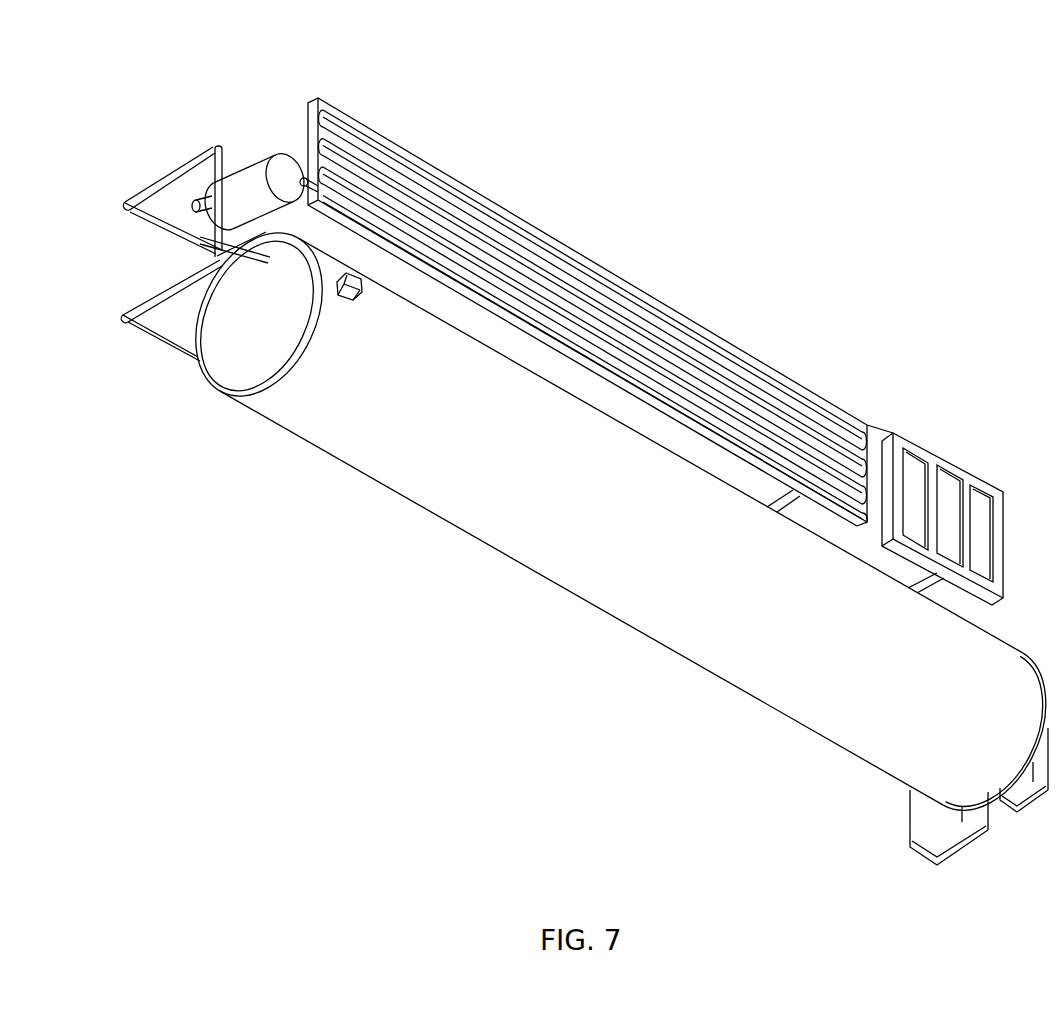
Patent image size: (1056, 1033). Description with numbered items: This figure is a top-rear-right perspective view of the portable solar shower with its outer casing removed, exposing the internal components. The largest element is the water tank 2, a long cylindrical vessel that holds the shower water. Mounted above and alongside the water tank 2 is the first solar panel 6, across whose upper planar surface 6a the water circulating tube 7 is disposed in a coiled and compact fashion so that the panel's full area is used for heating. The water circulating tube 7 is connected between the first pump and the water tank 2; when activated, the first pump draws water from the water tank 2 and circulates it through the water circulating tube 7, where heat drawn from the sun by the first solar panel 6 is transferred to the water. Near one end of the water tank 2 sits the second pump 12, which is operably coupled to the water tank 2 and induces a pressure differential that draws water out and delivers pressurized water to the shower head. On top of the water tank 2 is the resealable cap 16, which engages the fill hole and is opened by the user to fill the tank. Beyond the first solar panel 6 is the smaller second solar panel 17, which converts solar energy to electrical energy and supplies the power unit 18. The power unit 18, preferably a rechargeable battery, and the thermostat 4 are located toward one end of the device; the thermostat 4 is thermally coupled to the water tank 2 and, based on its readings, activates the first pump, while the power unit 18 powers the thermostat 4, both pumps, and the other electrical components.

The water tank 2 is at (437, 513).
The thermostat 4 is at (1032, 808).
The first solar panel 6 is at (322, 100).
The planar surface 6a is at (838, 402).
The water circulating tube 7 is at (745, 358).
The second pump 12 is at (280, 162).
The resealable cap 16 is at (352, 303).
The second solar panel 17 is at (951, 483).
The power unit 18 is at (958, 848).